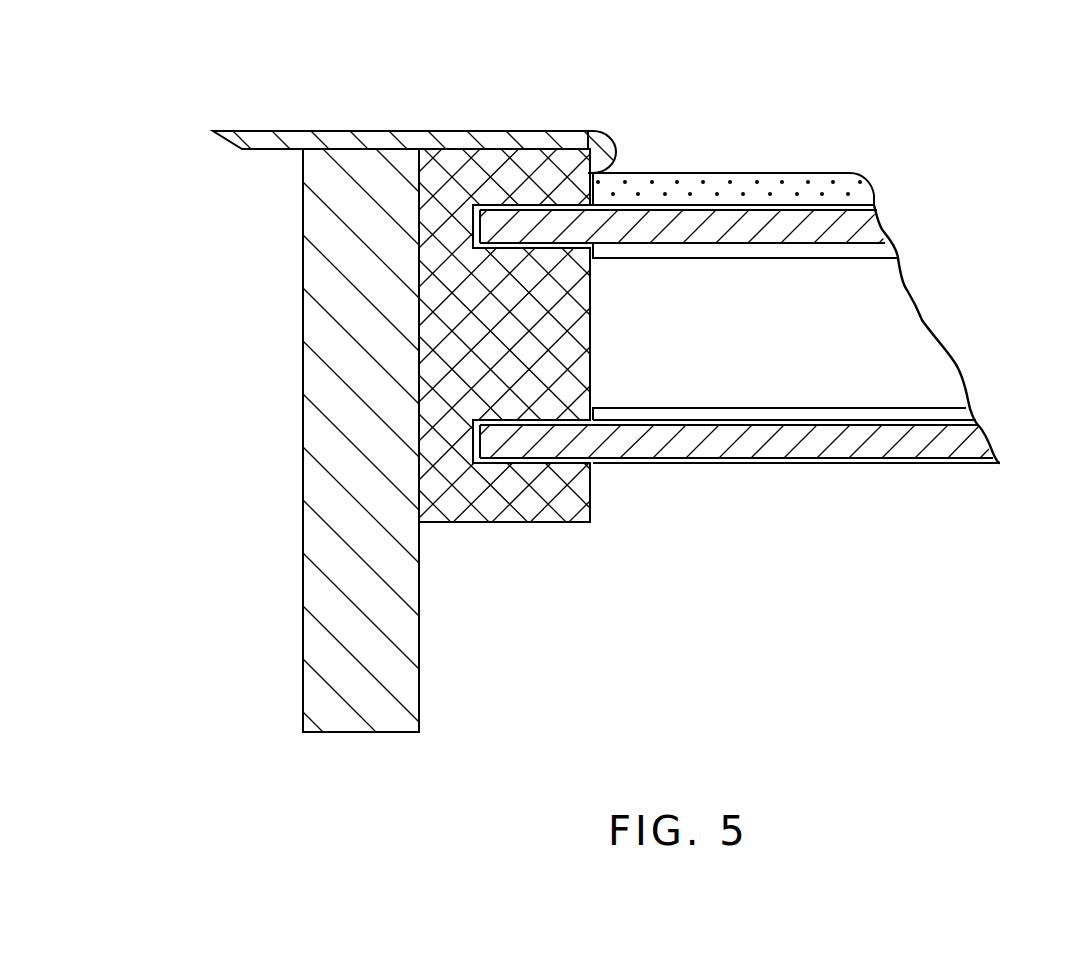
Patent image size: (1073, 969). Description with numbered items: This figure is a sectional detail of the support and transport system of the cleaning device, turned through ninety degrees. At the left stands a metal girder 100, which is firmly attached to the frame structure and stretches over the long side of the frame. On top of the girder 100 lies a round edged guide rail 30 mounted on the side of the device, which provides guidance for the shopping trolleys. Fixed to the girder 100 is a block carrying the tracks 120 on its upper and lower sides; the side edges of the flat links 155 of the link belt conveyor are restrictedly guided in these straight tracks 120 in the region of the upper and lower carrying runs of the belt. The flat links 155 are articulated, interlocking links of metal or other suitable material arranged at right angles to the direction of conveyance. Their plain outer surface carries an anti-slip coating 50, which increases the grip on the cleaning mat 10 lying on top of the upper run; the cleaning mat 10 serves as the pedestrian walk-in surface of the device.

The cleaning mat 10 is at (718, 180).
The guide rail 30 is at (602, 146).
The anti-slip coating 50 is at (875, 205).
The metal girder 100 is at (308, 585).
The track 120 is at (567, 303).
The flat link 155 is at (867, 247).